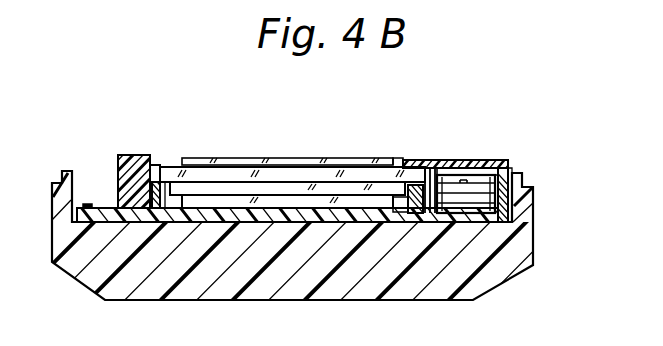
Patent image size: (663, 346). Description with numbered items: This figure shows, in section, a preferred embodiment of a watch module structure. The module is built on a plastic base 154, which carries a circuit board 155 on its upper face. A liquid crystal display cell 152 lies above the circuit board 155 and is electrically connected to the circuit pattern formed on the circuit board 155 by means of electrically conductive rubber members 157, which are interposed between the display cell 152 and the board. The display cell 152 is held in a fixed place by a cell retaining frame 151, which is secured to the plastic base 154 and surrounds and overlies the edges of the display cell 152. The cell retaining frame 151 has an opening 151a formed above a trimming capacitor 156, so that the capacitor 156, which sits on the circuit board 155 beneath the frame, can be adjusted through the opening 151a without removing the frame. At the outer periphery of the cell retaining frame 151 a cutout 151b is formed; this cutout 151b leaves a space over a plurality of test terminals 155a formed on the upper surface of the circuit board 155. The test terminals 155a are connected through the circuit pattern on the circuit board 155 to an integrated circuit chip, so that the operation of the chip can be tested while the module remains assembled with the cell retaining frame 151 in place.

The cell retaining frame 151 is at (412, 160).
The opening 151a is at (465, 167).
The cutout 151b is at (100, 185).
The liquid crystal display cell 152 is at (253, 165).
The plastic base 154 is at (292, 290).
The circuit board 155 is at (341, 185).
The test terminals 155a is at (95, 207).
The trimming capacitor 156 is at (480, 180).
The electrically conductive rubber members 157 is at (150, 157).